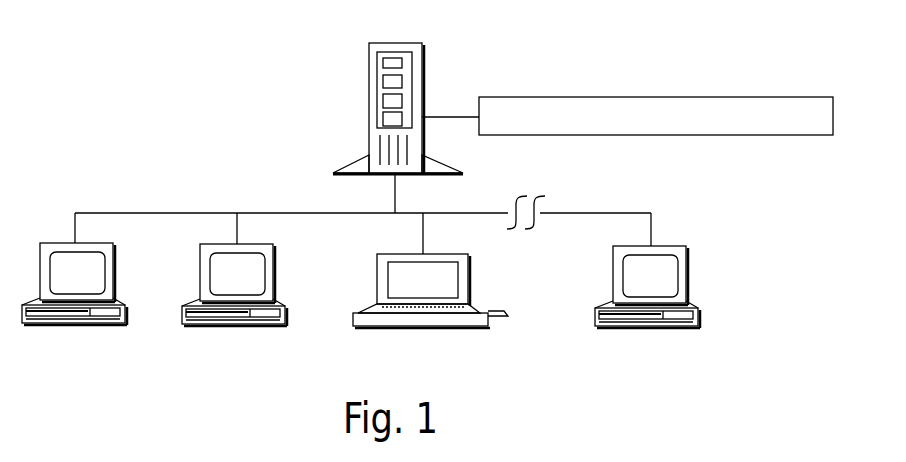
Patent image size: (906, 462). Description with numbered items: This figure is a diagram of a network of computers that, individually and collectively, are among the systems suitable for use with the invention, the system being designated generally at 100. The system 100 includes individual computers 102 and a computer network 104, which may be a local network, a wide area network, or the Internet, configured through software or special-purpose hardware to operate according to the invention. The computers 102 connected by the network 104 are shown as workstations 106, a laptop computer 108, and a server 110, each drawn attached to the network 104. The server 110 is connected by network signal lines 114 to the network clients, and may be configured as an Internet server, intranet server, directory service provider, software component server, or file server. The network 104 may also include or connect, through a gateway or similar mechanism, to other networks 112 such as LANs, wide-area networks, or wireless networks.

The system 100 is at (427, 206).
The computers 102 is at (389, 208).
The computer network 104 is at (363, 213).
The workstations 106 is at (389, 308).
The laptop computers 108 is at (456, 308).
The servers 110 is at (376, 108).
The other networks 112 is at (656, 116).
The network signal lines 114 is at (705, 220).